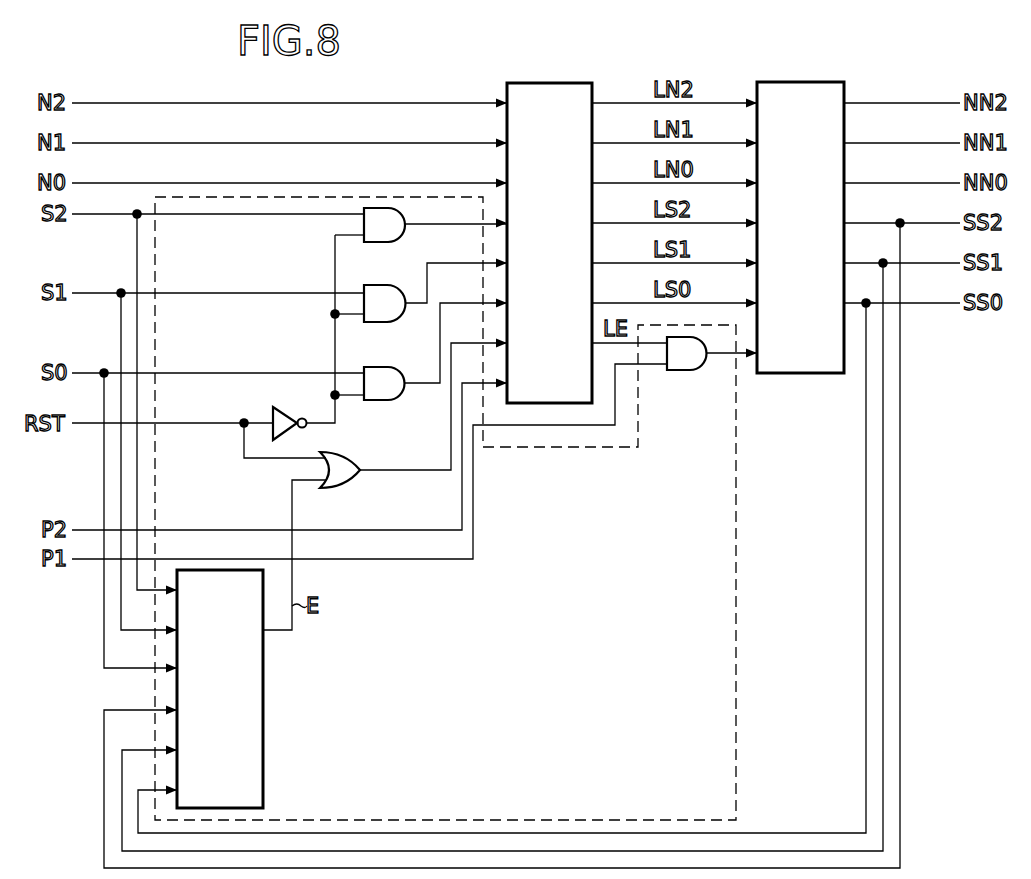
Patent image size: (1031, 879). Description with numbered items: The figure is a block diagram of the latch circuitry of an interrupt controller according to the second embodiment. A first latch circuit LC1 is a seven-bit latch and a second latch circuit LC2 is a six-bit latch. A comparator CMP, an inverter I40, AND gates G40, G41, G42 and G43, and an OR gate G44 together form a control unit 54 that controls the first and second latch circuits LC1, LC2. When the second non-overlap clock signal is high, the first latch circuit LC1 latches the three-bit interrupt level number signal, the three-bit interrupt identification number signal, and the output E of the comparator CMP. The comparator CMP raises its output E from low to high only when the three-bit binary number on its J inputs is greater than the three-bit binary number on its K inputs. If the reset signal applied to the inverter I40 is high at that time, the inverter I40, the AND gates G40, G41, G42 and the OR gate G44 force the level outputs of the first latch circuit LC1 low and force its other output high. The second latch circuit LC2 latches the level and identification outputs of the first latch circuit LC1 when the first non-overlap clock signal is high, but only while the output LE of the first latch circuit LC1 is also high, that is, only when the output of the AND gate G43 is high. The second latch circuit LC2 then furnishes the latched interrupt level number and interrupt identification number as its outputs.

The control unit 54 is at (737, 790).
The first latch circuit LC1 is at (578, 84).
The second latch circuit LC2 is at (831, 83).
The AND gate G40 is at (384, 400).
The AND gate G41 is at (384, 322).
The AND gate G42 is at (384, 242).
The AND gate G43 is at (686, 370).
The OR gate G44 is at (340, 488).
The inverter I40 is at (270, 406).
The comparator CMP is at (265, 686).